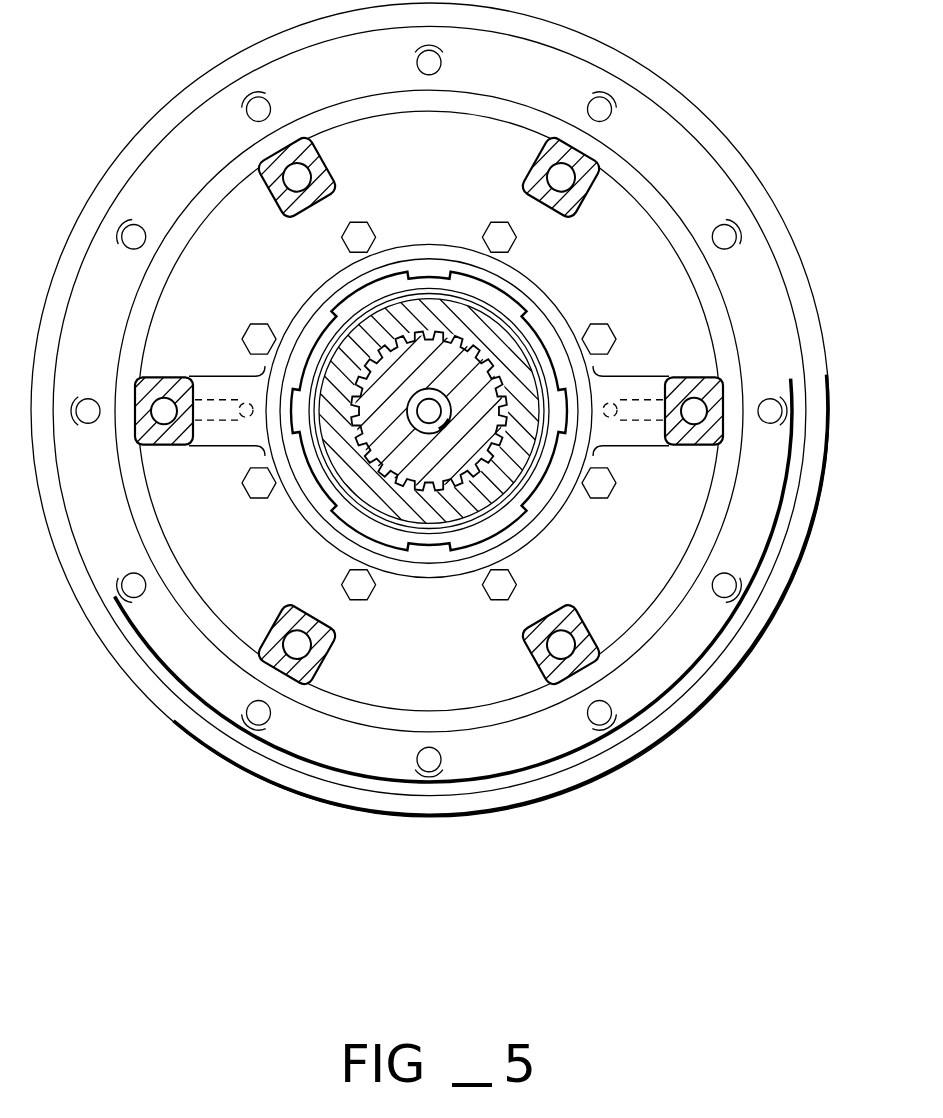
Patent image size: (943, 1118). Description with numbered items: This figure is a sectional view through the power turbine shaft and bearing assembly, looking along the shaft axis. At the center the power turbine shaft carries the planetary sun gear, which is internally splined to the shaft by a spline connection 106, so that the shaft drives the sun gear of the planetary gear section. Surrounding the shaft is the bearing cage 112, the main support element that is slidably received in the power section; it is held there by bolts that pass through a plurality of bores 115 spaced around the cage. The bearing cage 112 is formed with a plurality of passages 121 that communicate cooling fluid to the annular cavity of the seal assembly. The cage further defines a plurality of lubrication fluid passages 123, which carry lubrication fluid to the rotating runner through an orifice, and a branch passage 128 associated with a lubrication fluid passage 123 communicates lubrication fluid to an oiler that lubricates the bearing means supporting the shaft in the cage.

The spline connection 106 is at (408, 340).
The bearing cage 112 is at (567, 763).
The bores 115 is at (737, 232).
The passages 121 is at (292, 172).
The lubrication fluid passages 123 is at (167, 422).
The branch passage 128 is at (627, 400).